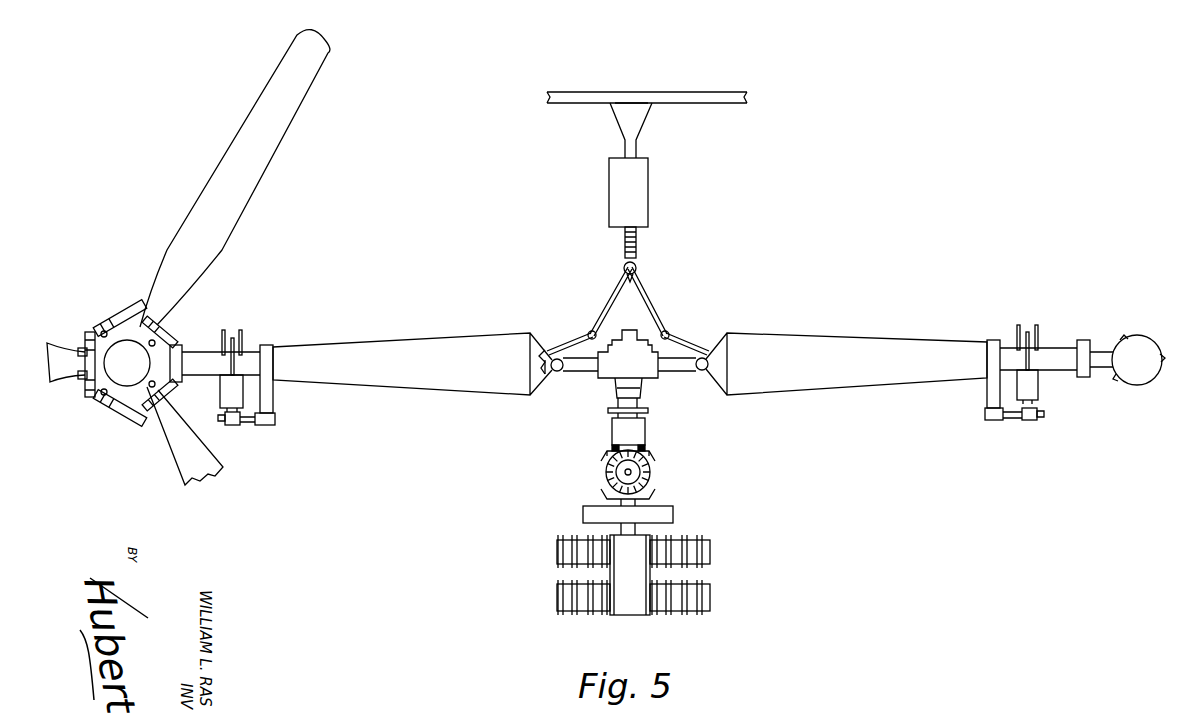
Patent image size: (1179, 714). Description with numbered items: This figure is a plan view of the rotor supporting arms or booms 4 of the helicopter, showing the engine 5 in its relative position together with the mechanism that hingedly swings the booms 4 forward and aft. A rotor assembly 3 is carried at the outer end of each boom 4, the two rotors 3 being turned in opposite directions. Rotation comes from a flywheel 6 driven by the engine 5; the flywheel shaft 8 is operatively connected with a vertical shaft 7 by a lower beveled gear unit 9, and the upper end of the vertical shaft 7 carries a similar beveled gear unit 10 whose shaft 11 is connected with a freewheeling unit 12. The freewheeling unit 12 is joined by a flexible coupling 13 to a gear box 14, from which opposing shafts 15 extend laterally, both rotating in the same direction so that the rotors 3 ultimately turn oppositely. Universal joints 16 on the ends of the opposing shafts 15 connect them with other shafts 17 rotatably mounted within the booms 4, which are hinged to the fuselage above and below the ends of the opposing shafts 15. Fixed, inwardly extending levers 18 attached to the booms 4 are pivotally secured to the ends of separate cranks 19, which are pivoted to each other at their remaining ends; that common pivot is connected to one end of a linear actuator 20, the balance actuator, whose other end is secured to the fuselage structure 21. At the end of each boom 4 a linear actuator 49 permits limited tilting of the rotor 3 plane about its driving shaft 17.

The rotor assembly 3 is at (120, 296).
The boom 4 is at (368, 388).
The engine 5 is at (634, 602).
The flywheel 6 is at (583, 515).
The vertical shaft 7 is at (632, 472).
The flywheel shaft 8 is at (608, 500).
The lower beveled gear unit 9 is at (600, 476).
The beveled gear unit 10 is at (608, 454).
The shaft 11 is at (648, 448).
The freewheeling unit 12 is at (640, 430).
The flexible coupling 13 is at (650, 411).
The gear box 14 is at (614, 378).
The opposing shafts 15 is at (584, 352).
The universal joint 16 is at (542, 347).
The shaft 17 is at (546, 374).
The lever 18 is at (594, 330).
The crank 19 is at (616, 286).
The linear actuator 20 is at (633, 190).
The fuselage structure 21 is at (716, 96).
The linear actuator 49 is at (232, 370).